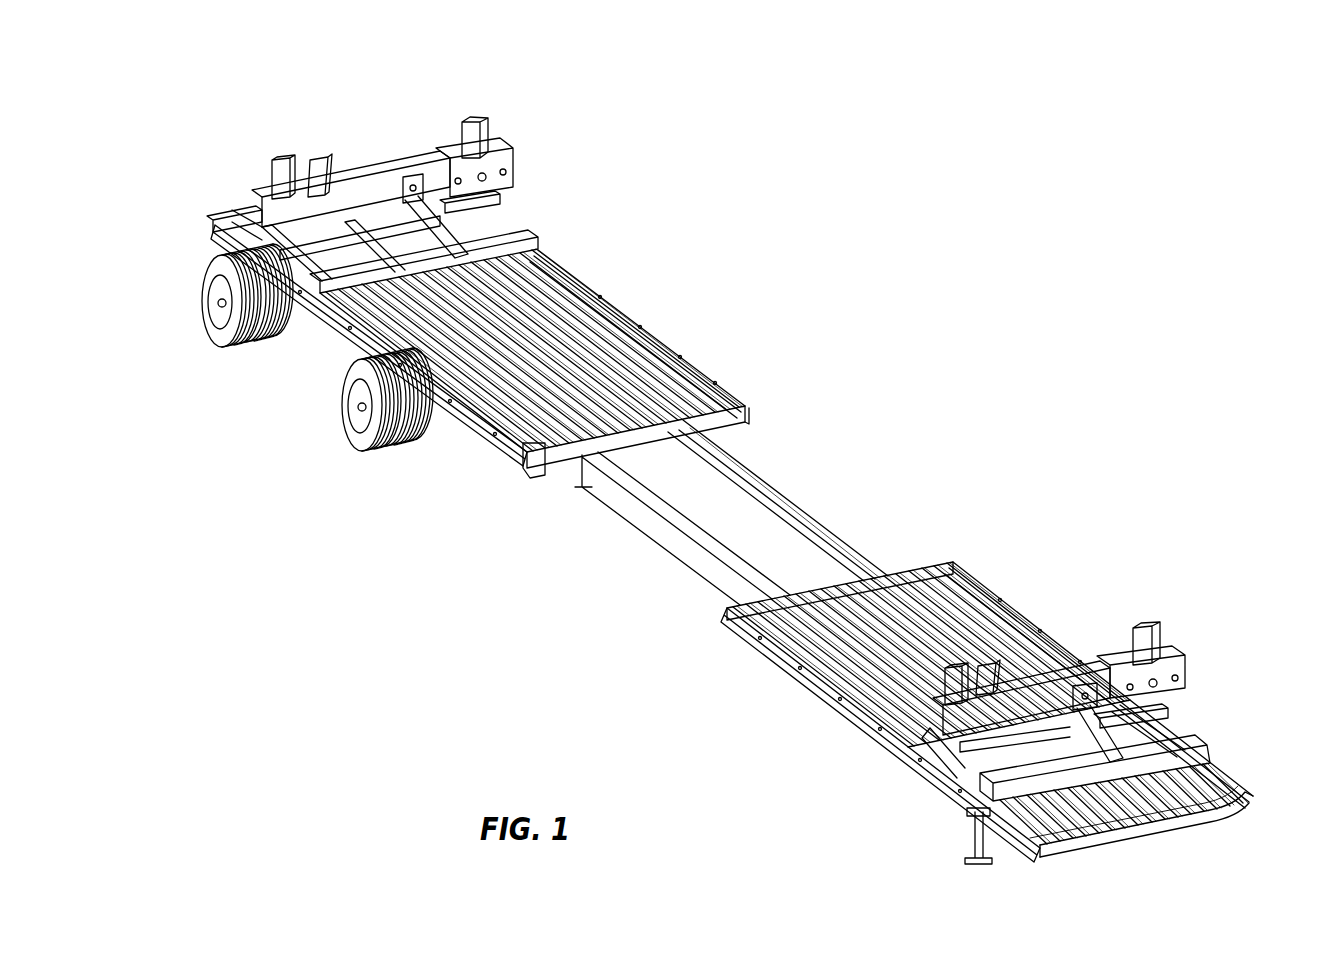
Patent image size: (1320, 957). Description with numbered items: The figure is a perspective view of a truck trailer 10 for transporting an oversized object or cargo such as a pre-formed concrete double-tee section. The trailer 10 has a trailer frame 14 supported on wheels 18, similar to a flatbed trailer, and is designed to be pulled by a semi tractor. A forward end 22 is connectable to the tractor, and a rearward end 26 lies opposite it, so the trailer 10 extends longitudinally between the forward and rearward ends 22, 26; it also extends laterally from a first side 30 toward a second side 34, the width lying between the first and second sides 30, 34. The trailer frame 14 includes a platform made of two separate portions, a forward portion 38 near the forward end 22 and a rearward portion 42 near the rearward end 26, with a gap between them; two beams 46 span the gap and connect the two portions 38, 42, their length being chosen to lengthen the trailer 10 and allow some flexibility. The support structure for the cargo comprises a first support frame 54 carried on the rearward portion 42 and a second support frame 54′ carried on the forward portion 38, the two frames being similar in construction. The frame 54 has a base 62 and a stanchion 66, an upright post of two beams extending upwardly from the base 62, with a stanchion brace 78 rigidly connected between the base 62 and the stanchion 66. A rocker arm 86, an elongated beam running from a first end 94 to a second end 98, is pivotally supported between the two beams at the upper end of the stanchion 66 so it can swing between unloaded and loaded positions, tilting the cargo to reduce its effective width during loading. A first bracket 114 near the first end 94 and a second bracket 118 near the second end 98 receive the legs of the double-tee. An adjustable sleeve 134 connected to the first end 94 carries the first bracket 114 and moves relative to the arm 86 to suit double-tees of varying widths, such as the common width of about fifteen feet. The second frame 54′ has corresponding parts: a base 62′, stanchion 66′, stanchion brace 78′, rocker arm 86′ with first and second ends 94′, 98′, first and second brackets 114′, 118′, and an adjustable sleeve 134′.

The truck trailer 10 is at (870, 400).
The trailer frame 14 is at (740, 643).
The wheels 18 is at (208, 312).
The forward end 22 is at (1152, 840).
The rearward end 26 is at (262, 212).
The first side 30 is at (655, 343).
The second side 34 is at (472, 432).
The forward portion 38 is at (805, 655).
The rearward portion 42 is at (557, 290).
The beams 46 is at (640, 513).
The first support frame 54 is at (497, 112).
The base 62 is at (488, 205).
The stanchion 66 is at (390, 172).
The stanchion brace 78 is at (423, 207).
The rocker arm 86 is at (352, 172).
The first end 94 is at (515, 160).
The second end 98 is at (212, 222).
The first bracket 114 is at (472, 128).
The second bracket 118 is at (285, 157).
The adjustable sleeve 134 is at (505, 180).
The second support frame 54′ is at (1178, 648).
The base 62′ is at (1180, 720).
The stanchion 66′ is at (1023, 682).
The stanchion brace 78′ is at (1085, 707).
The rocker arm 86′ is at (1018, 690).
The first end 94′ is at (1187, 660).
The second end 98′ is at (940, 715).
The first bracket 114′ is at (1143, 633).
The second bracket 118′ is at (945, 673).
The adjustable sleeve 134′ is at (1180, 689).